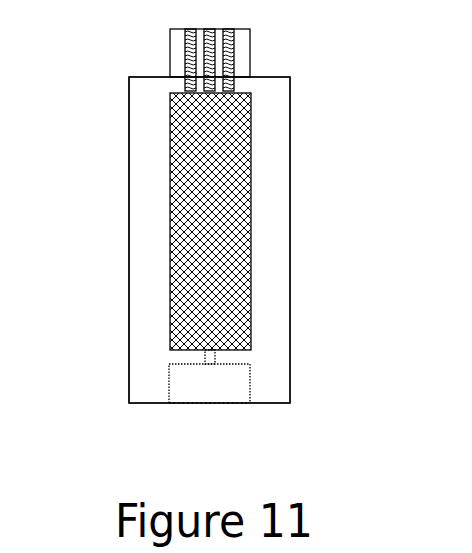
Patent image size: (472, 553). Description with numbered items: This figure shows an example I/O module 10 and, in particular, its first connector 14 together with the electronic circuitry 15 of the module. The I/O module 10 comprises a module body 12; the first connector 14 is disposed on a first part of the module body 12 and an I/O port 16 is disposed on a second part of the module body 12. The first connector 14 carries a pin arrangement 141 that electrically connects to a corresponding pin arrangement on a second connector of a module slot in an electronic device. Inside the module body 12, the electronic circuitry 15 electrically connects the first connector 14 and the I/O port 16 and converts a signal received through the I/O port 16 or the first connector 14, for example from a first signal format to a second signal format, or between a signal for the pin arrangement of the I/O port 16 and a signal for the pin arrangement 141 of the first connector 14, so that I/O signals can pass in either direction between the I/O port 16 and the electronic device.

The I/O module 10 is at (292, 177).
The module body 12 is at (143, 160).
The first connector 14 is at (177, 36).
The pin arrangement 141 is at (235, 34).
The electronic circuitry 15 is at (240, 293).
The I/O port 16 is at (128, 395).